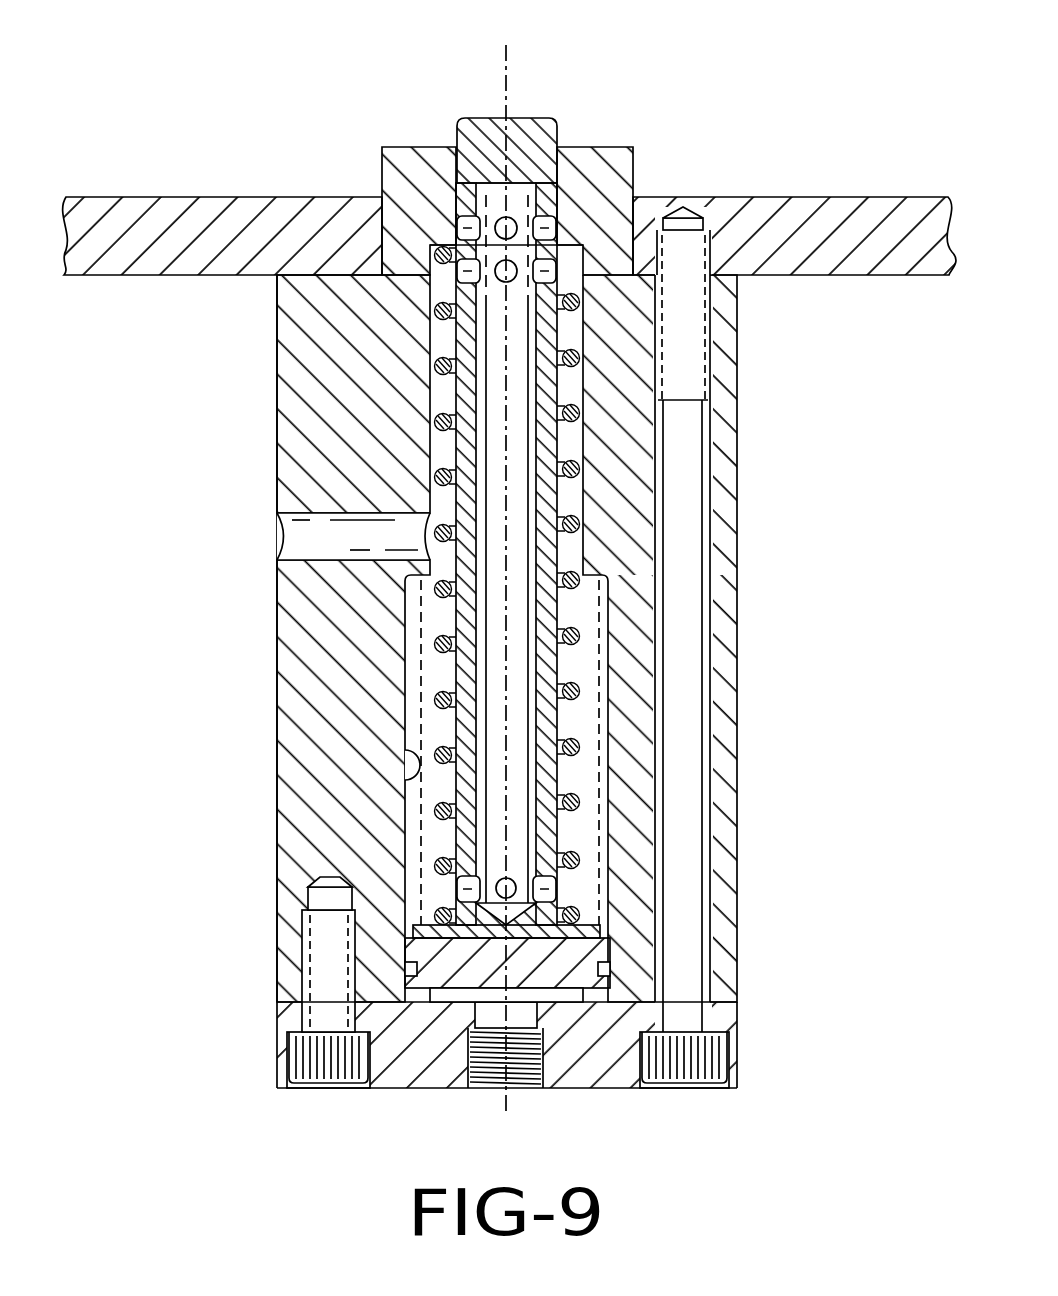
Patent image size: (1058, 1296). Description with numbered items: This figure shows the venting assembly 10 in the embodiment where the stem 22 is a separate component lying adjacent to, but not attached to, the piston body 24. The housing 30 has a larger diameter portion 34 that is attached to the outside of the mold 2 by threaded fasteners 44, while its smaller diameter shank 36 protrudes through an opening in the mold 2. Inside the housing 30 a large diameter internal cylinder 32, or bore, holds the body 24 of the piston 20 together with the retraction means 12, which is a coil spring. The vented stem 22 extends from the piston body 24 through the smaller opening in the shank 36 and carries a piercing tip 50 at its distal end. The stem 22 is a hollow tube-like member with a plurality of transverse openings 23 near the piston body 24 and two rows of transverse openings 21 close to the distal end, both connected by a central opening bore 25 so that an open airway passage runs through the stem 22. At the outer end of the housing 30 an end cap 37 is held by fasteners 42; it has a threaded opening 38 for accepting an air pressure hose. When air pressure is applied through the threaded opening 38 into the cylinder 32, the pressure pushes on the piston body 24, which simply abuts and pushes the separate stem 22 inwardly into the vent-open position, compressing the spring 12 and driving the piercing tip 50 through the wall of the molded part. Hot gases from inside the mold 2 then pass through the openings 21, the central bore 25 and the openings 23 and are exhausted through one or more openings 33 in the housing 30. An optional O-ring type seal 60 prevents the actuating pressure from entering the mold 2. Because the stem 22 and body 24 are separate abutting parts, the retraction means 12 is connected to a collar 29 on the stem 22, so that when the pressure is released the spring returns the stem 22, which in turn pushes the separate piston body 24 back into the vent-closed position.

The mold 2 is at (867, 248).
The venting assembly 10 is at (190, 715).
The retraction means 12 is at (578, 745).
The piston 20 is at (518, 700).
The transverse openings 21 is at (497, 227).
The vented stem 22 is at (562, 500).
The openings 23 is at (514, 884).
The piston body 24 is at (552, 965).
The central opening bore 25 is at (519, 455).
The collar 29 is at (593, 928).
The housing 30 is at (275, 873).
The internal cylinder 32 is at (405, 778).
The openings in the housing 33 is at (313, 532).
The larger diameter portion 34 is at (302, 340).
The smaller diameter shank 36 is at (397, 177).
The end cap 37 is at (403, 1043).
The threaded opening 38 is at (493, 1073).
The fasteners 42 is at (323, 1068).
The threaded fasteners 44 is at (688, 1067).
The piercing tip 50 is at (523, 128).
The O-ring type seal 60 is at (607, 967).